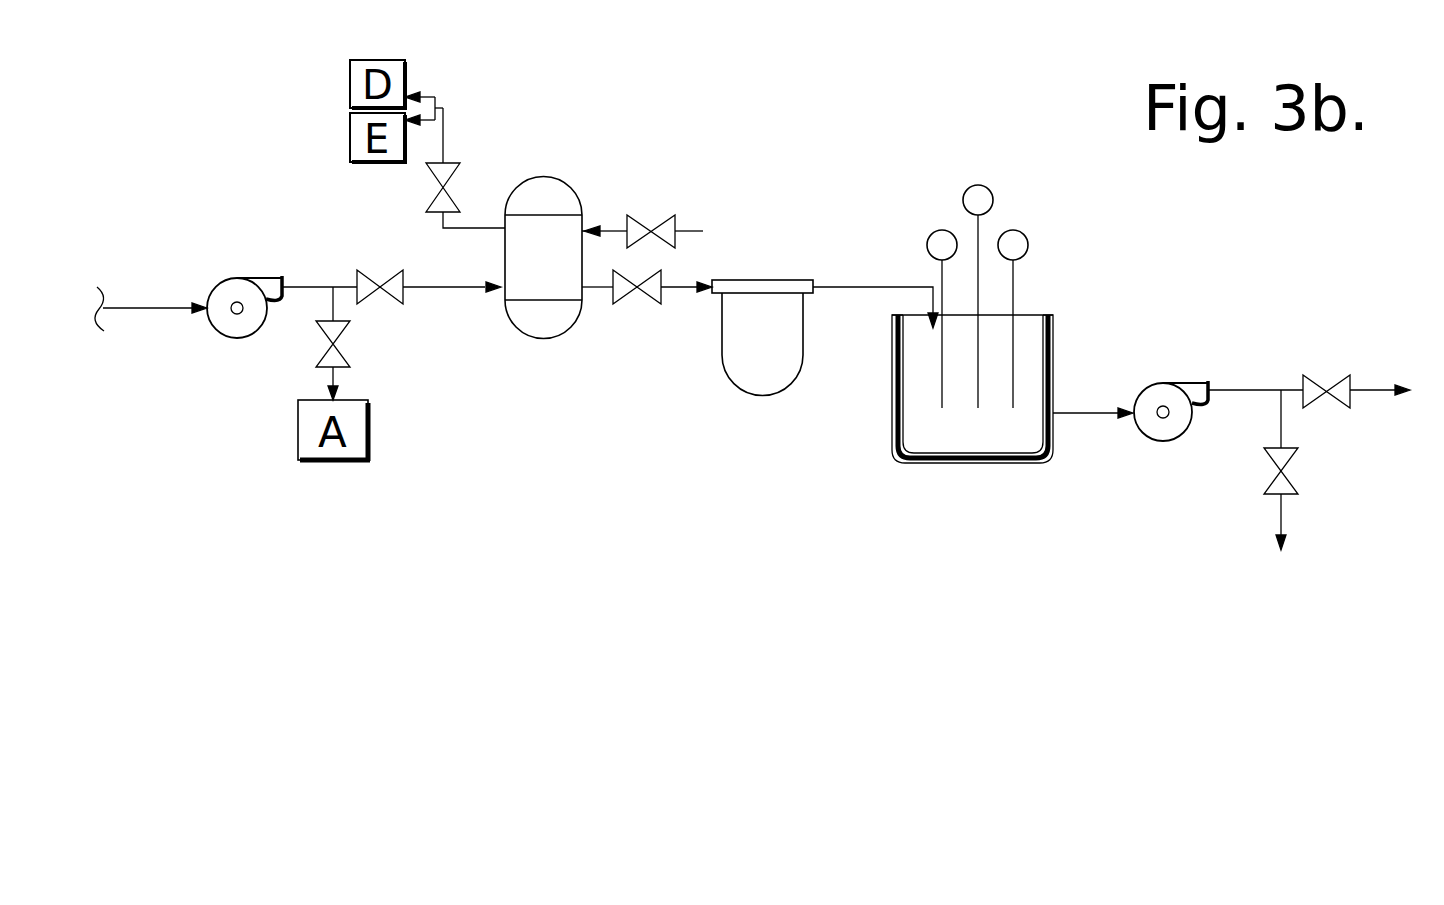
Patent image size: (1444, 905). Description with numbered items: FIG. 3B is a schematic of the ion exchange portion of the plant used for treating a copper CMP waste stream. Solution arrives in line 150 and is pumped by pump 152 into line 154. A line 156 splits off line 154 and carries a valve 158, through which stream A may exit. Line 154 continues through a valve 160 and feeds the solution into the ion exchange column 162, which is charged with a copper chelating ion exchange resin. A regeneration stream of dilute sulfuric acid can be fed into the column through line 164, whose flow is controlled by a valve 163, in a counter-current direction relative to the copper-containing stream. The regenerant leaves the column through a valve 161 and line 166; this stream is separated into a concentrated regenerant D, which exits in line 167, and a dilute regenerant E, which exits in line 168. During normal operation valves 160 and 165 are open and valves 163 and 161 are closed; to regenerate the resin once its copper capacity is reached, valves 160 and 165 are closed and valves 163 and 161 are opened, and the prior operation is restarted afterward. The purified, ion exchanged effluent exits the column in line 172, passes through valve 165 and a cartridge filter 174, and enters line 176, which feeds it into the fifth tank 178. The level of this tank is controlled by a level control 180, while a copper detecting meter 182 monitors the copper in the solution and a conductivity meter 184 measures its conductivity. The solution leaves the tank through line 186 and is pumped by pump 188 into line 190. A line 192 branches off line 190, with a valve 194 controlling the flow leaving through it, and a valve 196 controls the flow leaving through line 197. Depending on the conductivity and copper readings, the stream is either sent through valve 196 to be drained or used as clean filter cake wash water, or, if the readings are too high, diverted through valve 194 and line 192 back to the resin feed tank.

The line 150 is at (137, 308).
The pump 152 is at (236, 338).
The line 154 is at (300, 262).
The line 156 is at (333, 302).
The valve 158 is at (347, 358).
The valve 160 is at (392, 283).
The valve 161 is at (450, 197).
The ion exchange column 162 is at (566, 183).
The valve 163 is at (637, 218).
The line 164 is at (700, 231).
The valve 165 is at (650, 300).
The line 166 is at (455, 244).
The line 167 is at (440, 70).
The line 168 is at (427, 120).
The line 172 is at (598, 287).
The filter 174 is at (737, 385).
The line 176 is at (865, 285).
The fifth tank 178 is at (900, 461).
The level control 180 is at (937, 233).
The copper detecting meter 182 is at (977, 187).
The conductivity meter 184 is at (1017, 232).
The line 186 is at (1078, 413).
The pump 188 is at (1160, 380).
The line 190 is at (1248, 377).
The line 192 is at (1279, 427).
The valve 194 is at (1297, 483).
The valve 196 is at (1345, 380).
The line 197 is at (1368, 392).